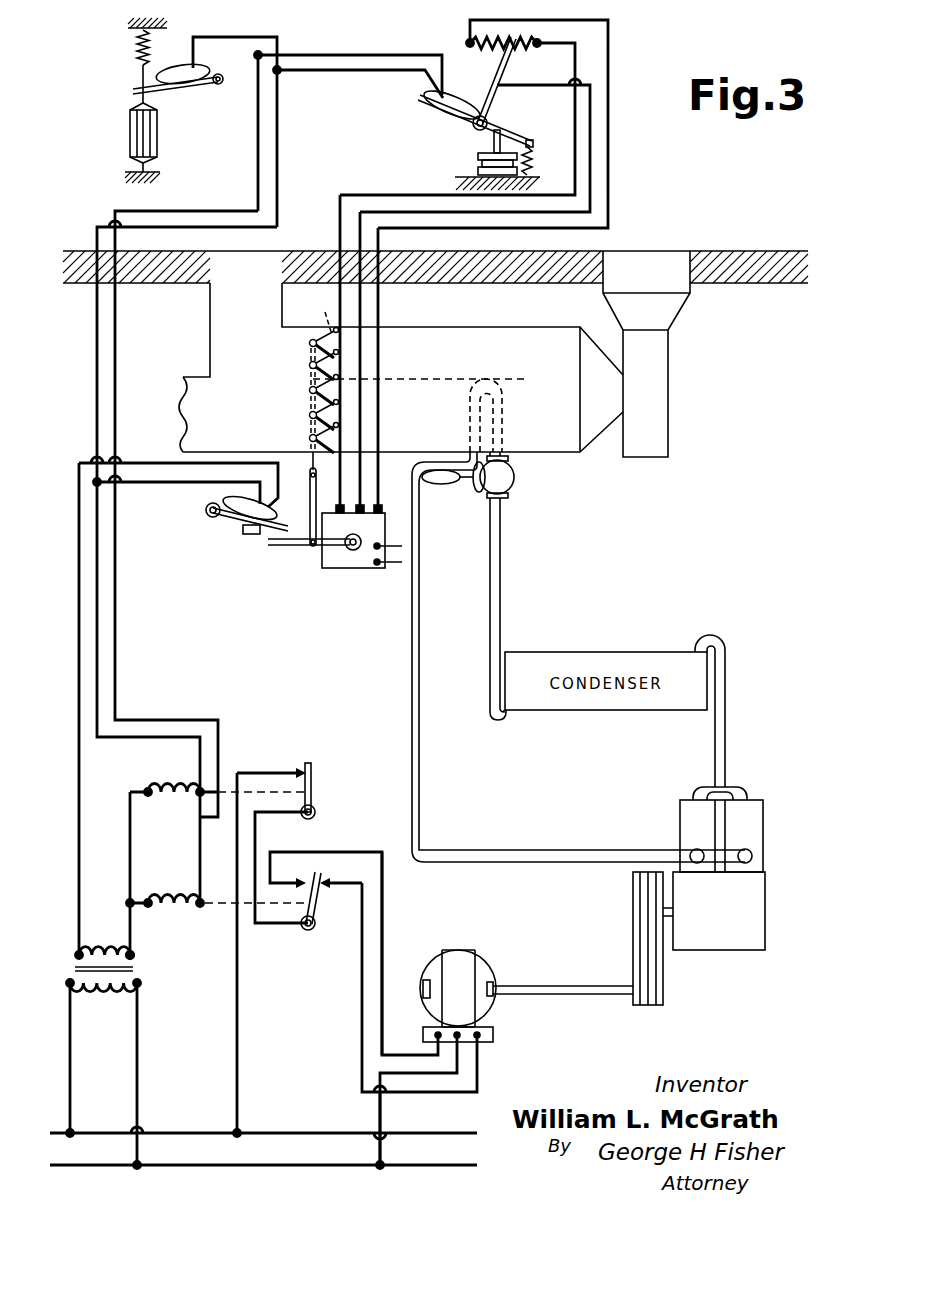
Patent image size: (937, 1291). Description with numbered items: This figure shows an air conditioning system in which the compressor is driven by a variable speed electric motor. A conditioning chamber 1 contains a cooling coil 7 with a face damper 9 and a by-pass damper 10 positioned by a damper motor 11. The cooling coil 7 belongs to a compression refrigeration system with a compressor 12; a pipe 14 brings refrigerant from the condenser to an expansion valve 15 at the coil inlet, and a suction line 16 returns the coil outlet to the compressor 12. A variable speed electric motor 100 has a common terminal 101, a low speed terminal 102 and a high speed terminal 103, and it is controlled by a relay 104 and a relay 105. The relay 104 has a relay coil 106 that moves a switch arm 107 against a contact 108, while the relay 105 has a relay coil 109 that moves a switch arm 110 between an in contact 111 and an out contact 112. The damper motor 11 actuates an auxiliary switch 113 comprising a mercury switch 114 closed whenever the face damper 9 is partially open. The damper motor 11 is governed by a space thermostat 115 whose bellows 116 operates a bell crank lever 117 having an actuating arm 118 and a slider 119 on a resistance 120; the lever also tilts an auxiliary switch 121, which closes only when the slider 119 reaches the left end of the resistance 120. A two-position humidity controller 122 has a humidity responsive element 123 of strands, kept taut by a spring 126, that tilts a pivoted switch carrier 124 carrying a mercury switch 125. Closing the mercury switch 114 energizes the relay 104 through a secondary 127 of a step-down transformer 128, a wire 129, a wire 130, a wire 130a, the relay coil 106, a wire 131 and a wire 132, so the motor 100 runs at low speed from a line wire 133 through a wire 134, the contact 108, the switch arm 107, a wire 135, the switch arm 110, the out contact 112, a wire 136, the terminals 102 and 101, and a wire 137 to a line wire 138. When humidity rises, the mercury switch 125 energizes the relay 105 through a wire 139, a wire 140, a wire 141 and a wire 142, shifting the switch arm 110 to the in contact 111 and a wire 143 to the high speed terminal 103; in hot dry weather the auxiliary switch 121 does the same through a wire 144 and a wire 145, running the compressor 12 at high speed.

The conditioning chamber 1 is at (447, 310).
The cooling coil 7 is at (470, 421).
The face damper 9 is at (310, 420).
The by-pass damper 10 is at (316, 317).
The damper motor 11 is at (356, 565).
The compressor 12 is at (680, 817).
The pipe 14 is at (502, 597).
The expansion valve 15 is at (506, 492).
The suction line 16 is at (412, 751).
The variable speed electric motor 100 is at (477, 969).
The common terminal 101 is at (467, 1045).
The low speed terminal 102 is at (485, 1036).
The high speed terminal 103 is at (427, 1042).
The relay 104 is at (166, 778).
The relay 105 is at (174, 891).
The relay coil 106 is at (184, 805).
The switch arm 107 is at (314, 792).
The contact 108 is at (300, 770).
The relay coil 109 is at (181, 916).
The switch arm 110 is at (328, 929).
The in contact 111 is at (306, 878).
The out contact 112 is at (326, 878).
The auxiliary switch 113 is at (236, 530).
The mercury switch 114 is at (225, 504).
The space thermostat 115 is at (463, 134).
The bellows 116 is at (478, 163).
The bell crank lever 117 is at (490, 116).
The actuating arm 118 is at (517, 132).
The slider 119 is at (504, 65).
The resistance 120 is at (498, 52).
The auxiliary switch 121 is at (418, 91).
The humidity controller 122 is at (111, 107).
The humidity responsive element 123 is at (146, 138).
The pivoted switch carrier 124 is at (208, 89).
The mercury switch 125 is at (181, 66).
The spring 126 is at (134, 49).
The secondary 127 is at (110, 938).
The step-down transformer 128 is at (139, 982).
The wire 129 is at (79, 816).
The wire 130 is at (154, 480).
The wire 130a is at (115, 621).
The wire 131 is at (130, 848).
The wire 132 is at (130, 904).
The line wire 133 is at (307, 1130).
The wire 134 is at (239, 1057).
The wire 135 is at (288, 934).
The wire 136 is at (361, 1013).
The wire 137 is at (381, 1106).
The line wire 138 is at (307, 1160).
The wire 139 is at (97, 371).
The wire 140 is at (244, 35).
The wire 141 is at (245, 74).
The wire 142 is at (216, 207).
The wire 143 is at (398, 932).
The wire 144 is at (337, 92).
The wire 145 is at (366, 53).